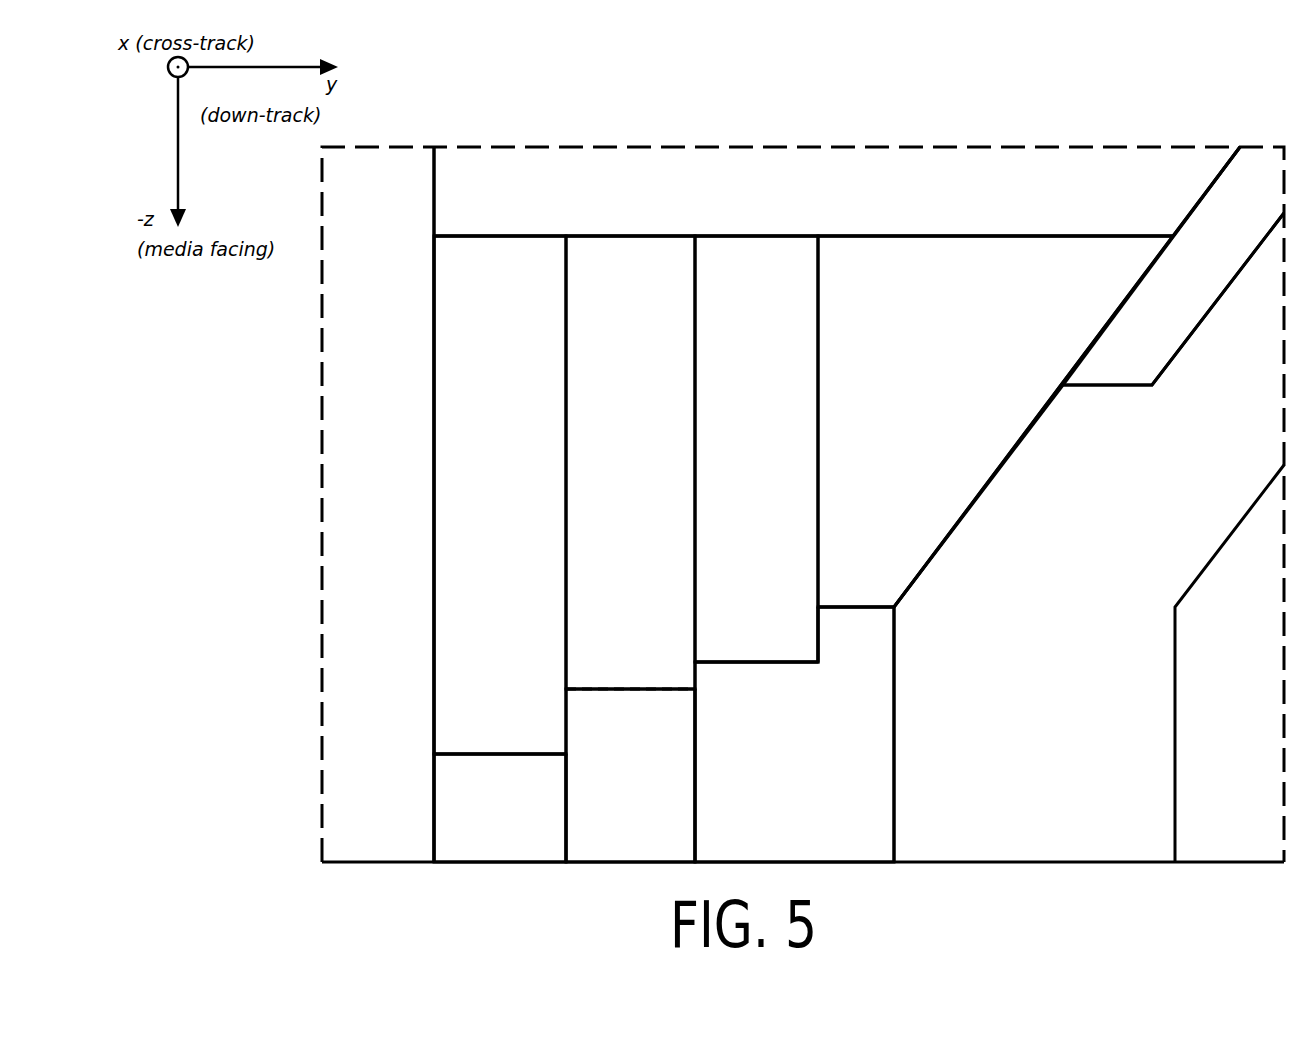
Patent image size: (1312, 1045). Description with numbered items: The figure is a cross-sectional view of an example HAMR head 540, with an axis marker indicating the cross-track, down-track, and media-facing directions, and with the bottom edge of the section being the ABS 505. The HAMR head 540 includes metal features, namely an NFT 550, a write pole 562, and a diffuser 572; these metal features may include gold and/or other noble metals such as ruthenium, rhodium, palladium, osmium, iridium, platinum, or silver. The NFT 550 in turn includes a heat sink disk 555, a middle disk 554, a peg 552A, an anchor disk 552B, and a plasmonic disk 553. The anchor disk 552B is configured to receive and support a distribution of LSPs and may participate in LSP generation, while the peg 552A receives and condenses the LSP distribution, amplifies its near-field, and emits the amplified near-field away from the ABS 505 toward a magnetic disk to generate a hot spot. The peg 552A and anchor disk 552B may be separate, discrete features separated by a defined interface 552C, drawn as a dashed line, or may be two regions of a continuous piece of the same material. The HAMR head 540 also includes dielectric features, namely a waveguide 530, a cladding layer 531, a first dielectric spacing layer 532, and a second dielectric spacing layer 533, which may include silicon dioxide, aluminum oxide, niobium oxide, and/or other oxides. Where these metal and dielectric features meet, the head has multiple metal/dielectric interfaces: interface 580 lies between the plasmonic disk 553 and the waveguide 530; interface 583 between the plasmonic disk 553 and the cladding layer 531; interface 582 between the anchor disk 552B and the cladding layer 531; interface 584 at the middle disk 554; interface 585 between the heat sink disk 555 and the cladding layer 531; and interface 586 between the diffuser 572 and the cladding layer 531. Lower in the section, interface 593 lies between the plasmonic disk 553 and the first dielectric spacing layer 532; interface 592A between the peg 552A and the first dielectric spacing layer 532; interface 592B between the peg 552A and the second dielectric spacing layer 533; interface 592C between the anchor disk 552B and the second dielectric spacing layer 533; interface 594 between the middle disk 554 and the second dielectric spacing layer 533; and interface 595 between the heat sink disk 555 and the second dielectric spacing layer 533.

The ABS 505 is at (322, 862).
The waveguide 530 is at (346, 516).
The cladding layer 531 is at (794, 206).
The first dielectric spacing layer 532 is at (471, 824).
The second dielectric spacing layer 533 is at (767, 764).
The HAMR head 540 is at (1185, 134).
The NFT 550 is at (741, 121).
The peg 552A is at (594, 791).
The anchor disk 552B is at (594, 476).
The interface 552C is at (625, 681).
The plasmonic disk 553 is at (471, 506).
The middle disk 554 is at (726, 463).
The heat sink disk 555 is at (907, 409).
The write pole 562 is at (1059, 563).
The diffuser 572 is at (1129, 329).
The interface 580 is at (434, 358).
The interface 582 is at (625, 236).
The interface 583 is at (510, 236).
The interface 584 is at (755, 236).
The interface 585 is at (1000, 236).
The interface 586 is at (1192, 213).
The interface 592A is at (568, 852).
The interface 592B is at (694, 741).
The interface 592C is at (699, 667).
The interface 593 is at (520, 754).
The interface 594 is at (818, 665).
The interface 595 is at (847, 607).